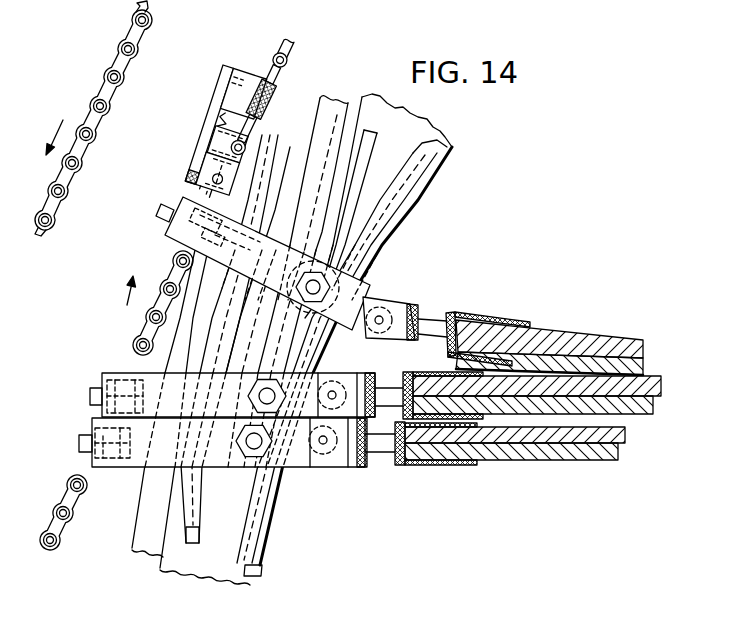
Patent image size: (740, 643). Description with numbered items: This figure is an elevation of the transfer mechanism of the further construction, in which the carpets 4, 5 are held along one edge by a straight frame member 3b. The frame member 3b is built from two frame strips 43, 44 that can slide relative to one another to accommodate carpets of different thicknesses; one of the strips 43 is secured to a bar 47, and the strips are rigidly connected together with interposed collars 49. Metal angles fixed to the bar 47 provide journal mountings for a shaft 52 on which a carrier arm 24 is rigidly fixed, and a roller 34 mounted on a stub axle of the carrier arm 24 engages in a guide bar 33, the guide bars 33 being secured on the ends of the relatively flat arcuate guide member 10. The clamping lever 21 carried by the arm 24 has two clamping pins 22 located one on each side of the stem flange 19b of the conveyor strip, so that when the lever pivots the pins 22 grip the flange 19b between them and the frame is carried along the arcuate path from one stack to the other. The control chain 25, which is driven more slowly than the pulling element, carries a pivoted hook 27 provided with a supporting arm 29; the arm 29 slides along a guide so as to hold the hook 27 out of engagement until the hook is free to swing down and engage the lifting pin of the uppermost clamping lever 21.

The control chain 25 is at (150, 21).
The supporting arm 29 is at (272, 107).
The pivoted hook 27 is at (218, 129).
The clamping lever 21 is at (247, 148).
The clamping pins 22 is at (271, 195).
The arcuate guide member 10 is at (452, 148).
The guide bar 33 is at (388, 213).
The roller 34 is at (304, 262).
The carrier arm 24 is at (357, 302).
The collars 49 is at (439, 320).
The bar 47 is at (415, 318).
The frame strip 43 is at (484, 313).
The straight frame member 3b is at (510, 310).
The carpet 4 is at (600, 342).
The carpet 5 is at (647, 363).
The frame strip 44 is at (452, 338).
The shaft 52 is at (333, 390).
The stem flange 19b is at (150, 518).